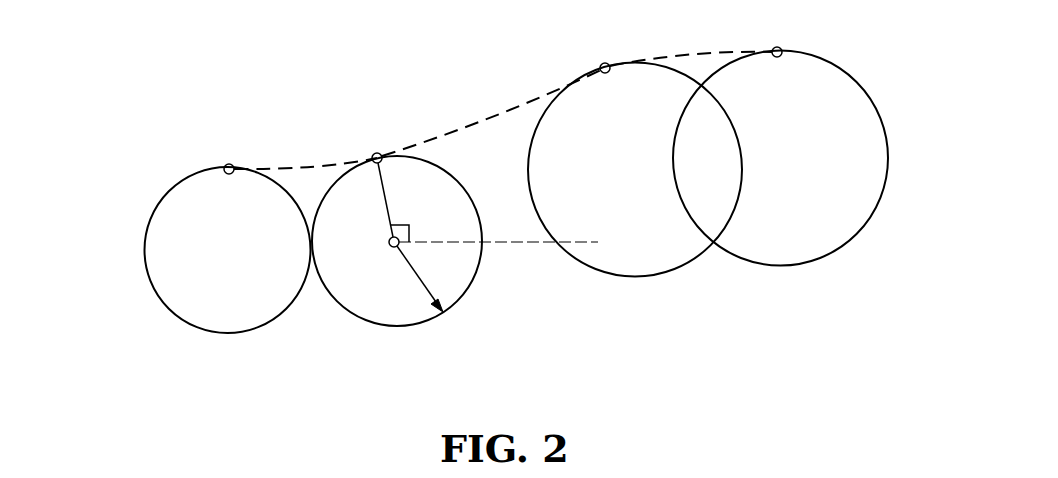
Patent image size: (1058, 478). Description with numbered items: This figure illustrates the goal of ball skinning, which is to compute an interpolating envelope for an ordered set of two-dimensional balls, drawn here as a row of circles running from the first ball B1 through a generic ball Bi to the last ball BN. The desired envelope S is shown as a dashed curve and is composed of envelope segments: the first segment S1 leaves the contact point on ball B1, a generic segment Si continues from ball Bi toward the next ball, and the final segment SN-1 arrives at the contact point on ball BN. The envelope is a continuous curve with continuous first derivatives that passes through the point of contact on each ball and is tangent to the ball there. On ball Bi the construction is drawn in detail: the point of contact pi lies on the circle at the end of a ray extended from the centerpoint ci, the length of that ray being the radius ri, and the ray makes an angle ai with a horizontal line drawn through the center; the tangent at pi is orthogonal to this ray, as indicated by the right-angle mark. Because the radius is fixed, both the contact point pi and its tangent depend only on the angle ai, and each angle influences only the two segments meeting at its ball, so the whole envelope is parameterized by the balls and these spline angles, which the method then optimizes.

The first ball B1 is at (228, 269).
The i-th ball Bi is at (397, 265).
The N-th ball BN is at (780, 180).
The first envelope segment S1 is at (305, 154).
The i-th envelope segment Si is at (491, 113).
The (N-1)-th envelope segment SN-1 is at (691, 42).
The point of contact pi is at (385, 195).
The centerpoint ci is at (381, 247).
The angle ai is at (494, 229).
The radius ri is at (417, 279).